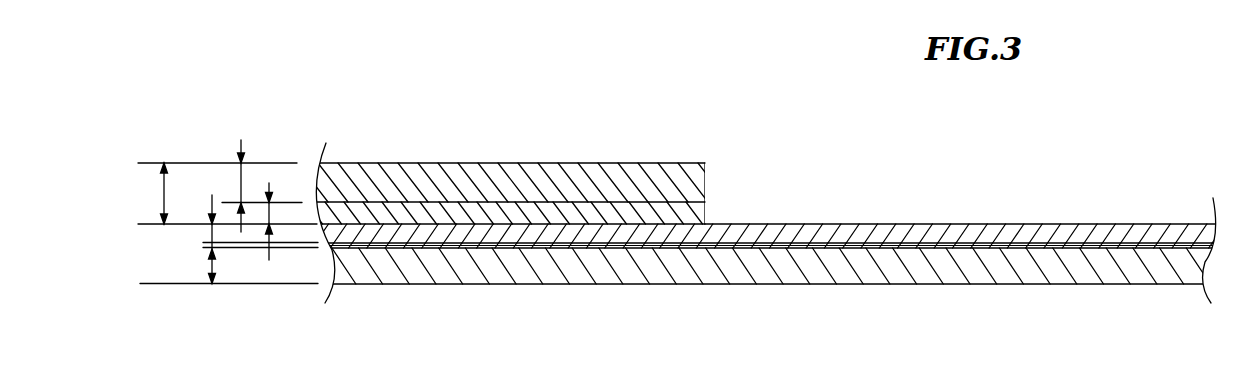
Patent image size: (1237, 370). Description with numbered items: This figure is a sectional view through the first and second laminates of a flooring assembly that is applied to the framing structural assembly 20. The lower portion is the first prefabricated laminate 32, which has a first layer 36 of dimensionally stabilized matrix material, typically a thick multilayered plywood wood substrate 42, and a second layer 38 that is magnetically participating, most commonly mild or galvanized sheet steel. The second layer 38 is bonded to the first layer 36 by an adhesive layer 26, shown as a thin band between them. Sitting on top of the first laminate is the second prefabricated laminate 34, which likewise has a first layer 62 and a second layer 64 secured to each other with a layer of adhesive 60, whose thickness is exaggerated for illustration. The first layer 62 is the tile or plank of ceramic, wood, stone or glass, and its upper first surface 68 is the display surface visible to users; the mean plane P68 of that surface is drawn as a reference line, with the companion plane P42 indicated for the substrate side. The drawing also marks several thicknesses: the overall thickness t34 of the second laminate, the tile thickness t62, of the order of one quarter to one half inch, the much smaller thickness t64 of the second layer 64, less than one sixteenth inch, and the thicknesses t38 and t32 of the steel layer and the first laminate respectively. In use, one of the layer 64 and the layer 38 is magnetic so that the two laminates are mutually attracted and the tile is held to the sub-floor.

The structural assembly 20 is at (412, 80).
The adhesive layer 26 is at (898, 244).
The first prefabricated laminate 32 is at (512, 270).
The second prefabricated laminate 34 is at (399, 180).
The first layer 36 is at (760, 268).
The second layer 38 is at (1008, 236).
The wood substrate 42 is at (945, 223).
The layer of adhesive 60 is at (645, 203).
The first layer 62 is at (500, 184).
The second layer 64 is at (690, 220).
The first surface 68 is at (599, 164).
The plane of first surface P68 is at (177, 163).
The plane of layer 42 P42 is at (145, 224).
The thickness of layer 34 t34 is at (162, 193).
The through-thickness of first layer t62 is at (240, 181).
The through-thickness of second layer t64 is at (269, 217).
The thickness of layer 38 t38 is at (212, 235).
The thickness of layer 32 t32 is at (212, 267).